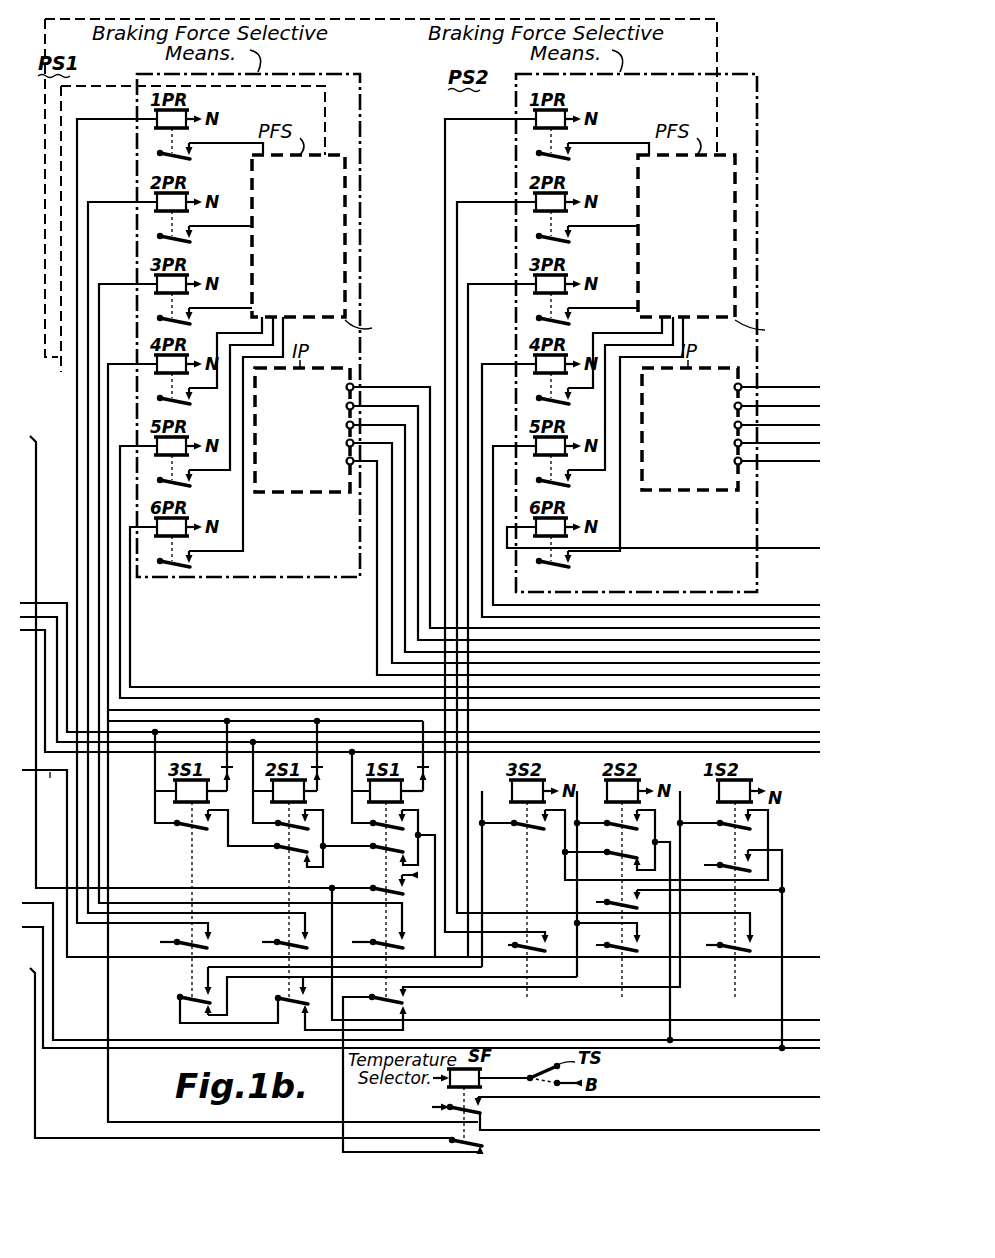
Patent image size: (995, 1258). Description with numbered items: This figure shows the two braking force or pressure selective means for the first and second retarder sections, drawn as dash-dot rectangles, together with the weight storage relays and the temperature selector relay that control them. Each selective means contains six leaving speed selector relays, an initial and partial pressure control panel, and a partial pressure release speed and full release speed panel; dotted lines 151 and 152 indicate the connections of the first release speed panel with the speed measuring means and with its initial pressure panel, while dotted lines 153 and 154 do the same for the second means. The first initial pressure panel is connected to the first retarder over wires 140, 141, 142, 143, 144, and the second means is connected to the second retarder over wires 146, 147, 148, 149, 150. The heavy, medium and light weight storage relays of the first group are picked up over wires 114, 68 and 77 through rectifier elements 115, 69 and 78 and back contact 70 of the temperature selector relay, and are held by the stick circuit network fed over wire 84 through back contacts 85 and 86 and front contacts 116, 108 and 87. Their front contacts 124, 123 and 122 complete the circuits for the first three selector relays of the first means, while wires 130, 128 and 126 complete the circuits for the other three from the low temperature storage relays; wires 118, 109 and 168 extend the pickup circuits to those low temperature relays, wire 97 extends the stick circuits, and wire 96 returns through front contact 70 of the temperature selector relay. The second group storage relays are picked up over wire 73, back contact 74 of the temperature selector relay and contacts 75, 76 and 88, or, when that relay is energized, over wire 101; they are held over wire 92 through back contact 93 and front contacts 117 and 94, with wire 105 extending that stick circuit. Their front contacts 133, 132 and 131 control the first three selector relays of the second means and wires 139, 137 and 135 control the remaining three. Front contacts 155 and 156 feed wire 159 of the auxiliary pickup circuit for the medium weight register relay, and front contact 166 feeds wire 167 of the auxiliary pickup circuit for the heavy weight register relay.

The dotted line 153 is at (370, 197).
The dotted line 151 is at (174, 242).
The wire 167 is at (425, 718).
The wire 114 is at (420, 681).
The wire 68 is at (420, 691).
The wire 77 is at (420, 702).
The wire 84 is at (51, 785).
The wire 92 is at (33, 891).
The wire 159 is at (422, 986).
The wire 73 is at (237, 1041).
The dotted line 152 is at (376, 329).
The dotted line 154 is at (768, 330).
The wire 140 is at (584, 492).
The wire 141 is at (584, 512).
The wire 142 is at (584, 528).
The wire 143 is at (584, 542).
The wire 144 is at (580, 567).
The wire 146 is at (778, 378).
The wire 147 is at (778, 397).
The wire 148 is at (778, 416).
The wire 149 is at (778, 434).
The wire 150 is at (778, 452).
The wire 139 is at (663, 536).
The wire 137 is at (656, 525).
The wire 135 is at (653, 490).
The wire 130 is at (475, 629).
The wire 128 is at (470, 589).
The wire 126 is at (464, 743).
The wire 168 is at (784, 722).
The wire 118 is at (799, 758).
The wire 109 is at (801, 784).
The rectifier element 78 is at (237, 756).
The rectifier element 69 is at (327, 756).
The rectifier element 115 is at (433, 765).
The front contact of relay 3S1 87 is at (213, 829).
The front contact of relay 2S1 108 is at (466, 919).
The back contact of relay 2S1 86 is at (314, 838).
The back contact of relay 1S1 85 is at (392, 894).
The front contact of relay 1S1 116 is at (387, 817).
The front contact of relay 1S1 166 is at (389, 880).
The front contact of relay 3S1 122 is at (162, 536).
The front contact of relay 2S1 123 is at (198, 578).
The front contact of relay 1S1 124 is at (252, 619).
The front contact of relay 3S1 88 is at (367, 995).
The front contact of relay 2S1 76 is at (328, 1002).
The contact of relay 1S1 75 is at (511, 972).
The front contact of relay 3S2 94 is at (623, 879).
The back contact of relay 2S2 93 is at (607, 884).
The front contact of relay 2S2 155 is at (684, 956).
The front contact of relay 1S2 117 is at (713, 814).
The front contact of relay 1S2 156 is at (733, 858).
The front contact of relay 3S2 131 is at (512, 537).
The front contact of relay 2S2 132 is at (607, 937).
The front contact of relay 1S2 133 is at (605, 579).
The wire 97 is at (421, 620).
The wire 105 is at (423, 973).
The wire 96 is at (811, 1082).
The wire 101 is at (816, 1116).
The contact of relay SF 70 is at (619, 1113).
The contact of relay SF 74 is at (482, 1142).